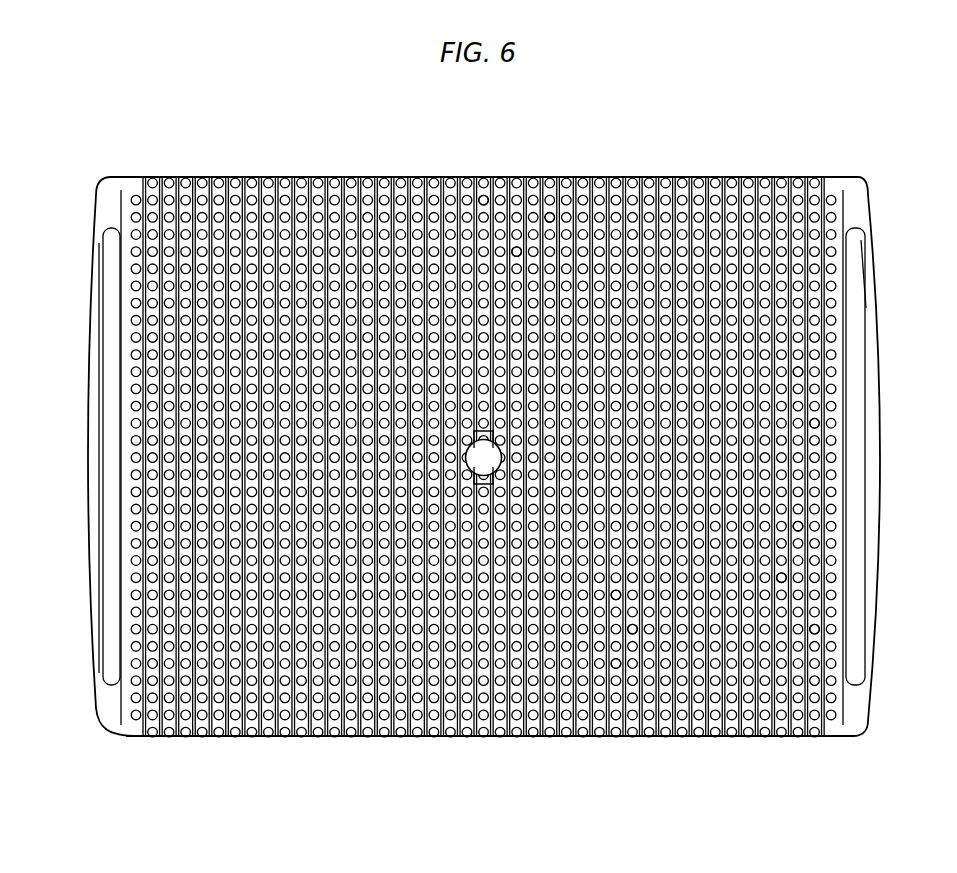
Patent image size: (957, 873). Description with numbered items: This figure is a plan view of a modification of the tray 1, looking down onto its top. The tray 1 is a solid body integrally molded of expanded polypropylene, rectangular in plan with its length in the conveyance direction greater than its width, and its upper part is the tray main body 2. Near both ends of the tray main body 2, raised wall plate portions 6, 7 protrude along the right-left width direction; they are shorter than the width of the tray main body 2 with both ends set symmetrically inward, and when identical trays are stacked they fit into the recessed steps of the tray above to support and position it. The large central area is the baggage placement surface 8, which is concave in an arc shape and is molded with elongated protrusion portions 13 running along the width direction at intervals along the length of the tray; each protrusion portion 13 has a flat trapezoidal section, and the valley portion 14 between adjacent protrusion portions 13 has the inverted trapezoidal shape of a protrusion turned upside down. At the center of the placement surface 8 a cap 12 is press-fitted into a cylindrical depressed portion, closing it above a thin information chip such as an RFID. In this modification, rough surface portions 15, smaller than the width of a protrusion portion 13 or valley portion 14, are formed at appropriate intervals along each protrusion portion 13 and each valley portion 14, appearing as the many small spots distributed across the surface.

The tray 1 is at (132, 158).
The tray main body 2 is at (409, 735).
The raised wall plate portion 6 is at (95, 405).
The raised wall plate portion 7 is at (850, 465).
The baggage placement surface 8 is at (575, 206).
The cap 12 is at (482, 448).
The elongated protrusion portion 13 is at (327, 190).
The valley portion 14 is at (244, 185).
The rough surface portion 15 is at (542, 209).